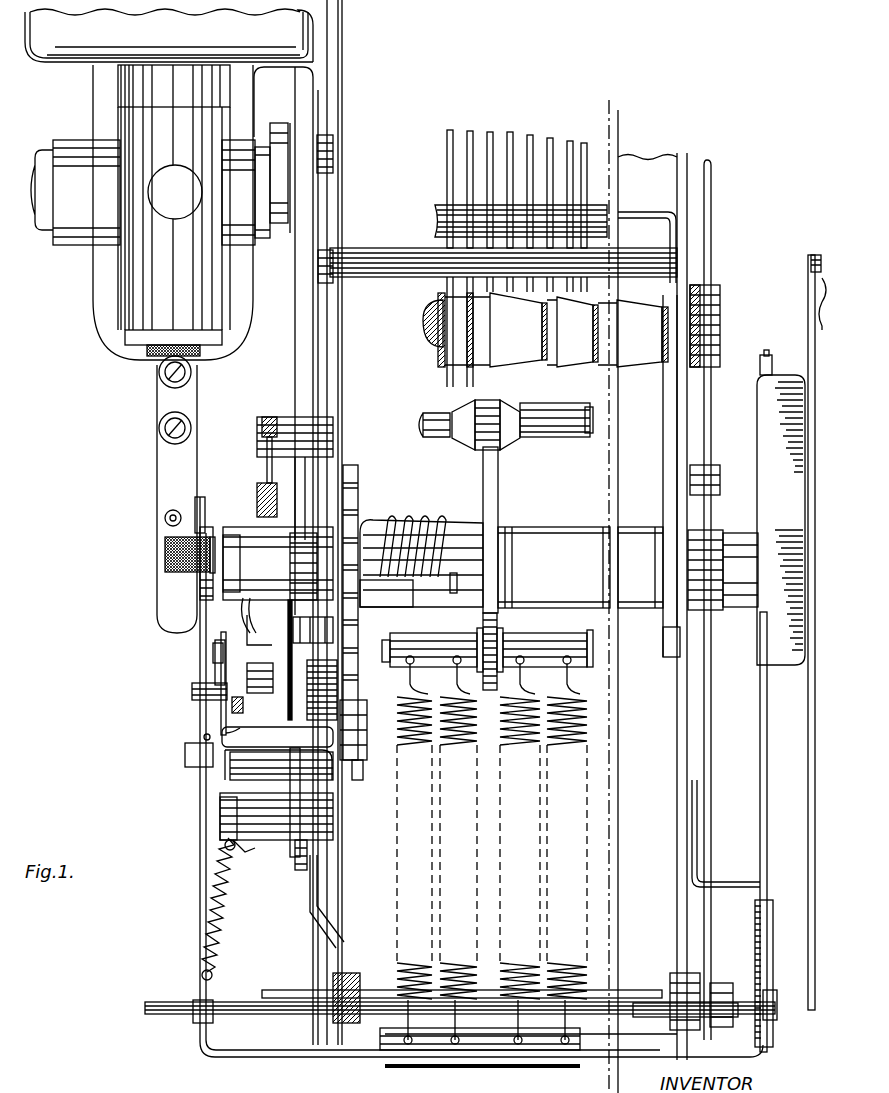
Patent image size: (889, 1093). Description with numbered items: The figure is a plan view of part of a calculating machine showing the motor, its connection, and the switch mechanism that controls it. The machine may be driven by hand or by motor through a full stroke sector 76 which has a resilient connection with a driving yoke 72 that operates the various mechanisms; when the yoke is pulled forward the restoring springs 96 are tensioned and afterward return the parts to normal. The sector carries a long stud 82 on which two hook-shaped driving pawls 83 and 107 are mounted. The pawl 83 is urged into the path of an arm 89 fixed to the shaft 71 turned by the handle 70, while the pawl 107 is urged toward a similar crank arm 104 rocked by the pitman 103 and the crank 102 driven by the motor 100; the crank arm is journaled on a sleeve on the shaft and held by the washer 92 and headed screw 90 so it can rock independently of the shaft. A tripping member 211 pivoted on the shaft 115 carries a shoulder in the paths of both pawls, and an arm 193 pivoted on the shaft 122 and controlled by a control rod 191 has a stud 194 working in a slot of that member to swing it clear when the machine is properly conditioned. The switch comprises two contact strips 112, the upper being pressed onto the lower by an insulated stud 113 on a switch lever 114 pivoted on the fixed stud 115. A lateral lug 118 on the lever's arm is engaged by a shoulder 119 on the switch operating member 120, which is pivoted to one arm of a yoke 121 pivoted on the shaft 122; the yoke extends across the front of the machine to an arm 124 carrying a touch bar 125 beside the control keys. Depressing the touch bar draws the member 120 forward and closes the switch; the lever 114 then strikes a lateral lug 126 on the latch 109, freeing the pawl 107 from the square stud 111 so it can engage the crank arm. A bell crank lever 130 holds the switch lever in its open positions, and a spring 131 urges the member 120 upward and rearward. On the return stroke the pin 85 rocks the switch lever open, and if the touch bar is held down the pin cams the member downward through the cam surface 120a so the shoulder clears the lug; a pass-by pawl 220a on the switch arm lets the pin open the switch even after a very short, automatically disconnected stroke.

The handle 70 is at (815, 338).
The shaft 71 is at (315, 590).
The driving yoke 72 is at (545, 535).
The full stroke sector 76 is at (355, 478).
The stud 82 is at (322, 685).
The driving pawl 83 is at (300, 705).
The pin 85 is at (193, 690).
The arm 89 is at (306, 643).
The headed screw 90 is at (232, 535).
The washer 92 is at (237, 600).
The restoring springs 96 is at (553, 727).
The motor 100 is at (169, 184).
The crank 102 is at (277, 137).
The pitman 103 is at (303, 372).
The crank arm 104 is at (280, 540).
The driving pawl 107 is at (240, 715).
The latch 109 is at (250, 652).
The square stud 111 is at (232, 705).
The contact strips 112 is at (160, 468).
The insulated stud 113 is at (178, 572).
The switch lever 114 is at (222, 715).
The fixed stud 115 is at (260, 762).
The lateral lug 118 is at (188, 760).
The shoulder 119 is at (205, 737).
The switch operating member 120 is at (205, 787).
The cam surface 120a is at (197, 505).
The yoke 121 is at (296, 1058).
The shaft 122 is at (165, 1002).
The arm 124 is at (767, 792).
The touch bar 125 is at (763, 405).
The lateral lug 126 is at (222, 680).
The bell crank lever 130 is at (233, 845).
The spring 131 is at (228, 900).
The control rod 191 is at (296, 997).
The arm 193 is at (325, 945).
The stud 194 is at (292, 849).
The tripping member 211 is at (302, 872).
The pass-by pawl 220a is at (213, 653).